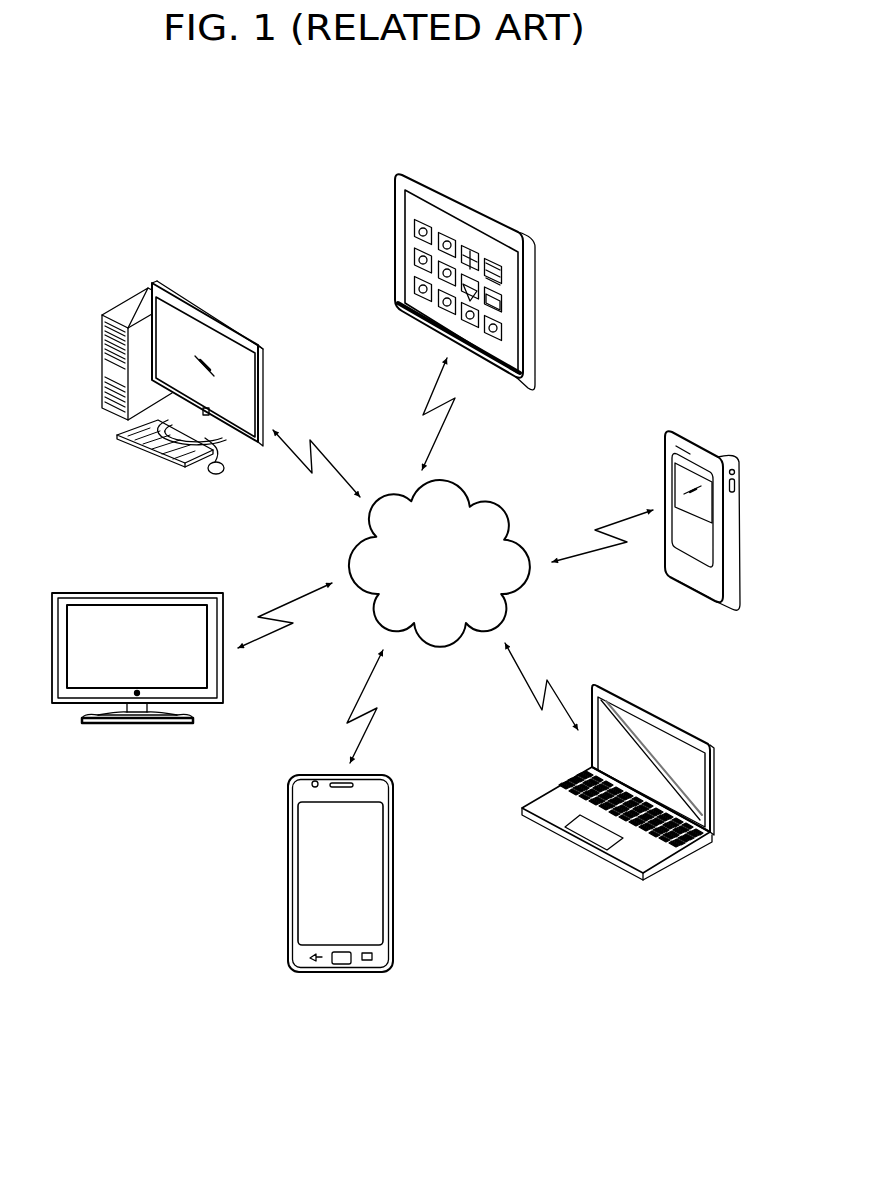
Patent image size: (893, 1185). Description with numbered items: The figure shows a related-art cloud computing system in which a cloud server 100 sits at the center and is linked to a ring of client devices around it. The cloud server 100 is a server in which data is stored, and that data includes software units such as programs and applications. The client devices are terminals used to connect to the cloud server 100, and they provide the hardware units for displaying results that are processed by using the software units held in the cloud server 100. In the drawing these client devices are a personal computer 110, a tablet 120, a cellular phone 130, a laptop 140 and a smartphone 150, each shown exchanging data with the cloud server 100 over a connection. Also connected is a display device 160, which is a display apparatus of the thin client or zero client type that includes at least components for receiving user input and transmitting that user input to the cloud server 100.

The cloud server 100 is at (503, 500).
The personal computer 110 is at (209, 312).
The tablet 120 is at (498, 223).
The cellular phone 130 is at (712, 442).
The laptop 140 is at (592, 855).
The smartphone 150 is at (320, 970).
The display device 160 is at (170, 593).